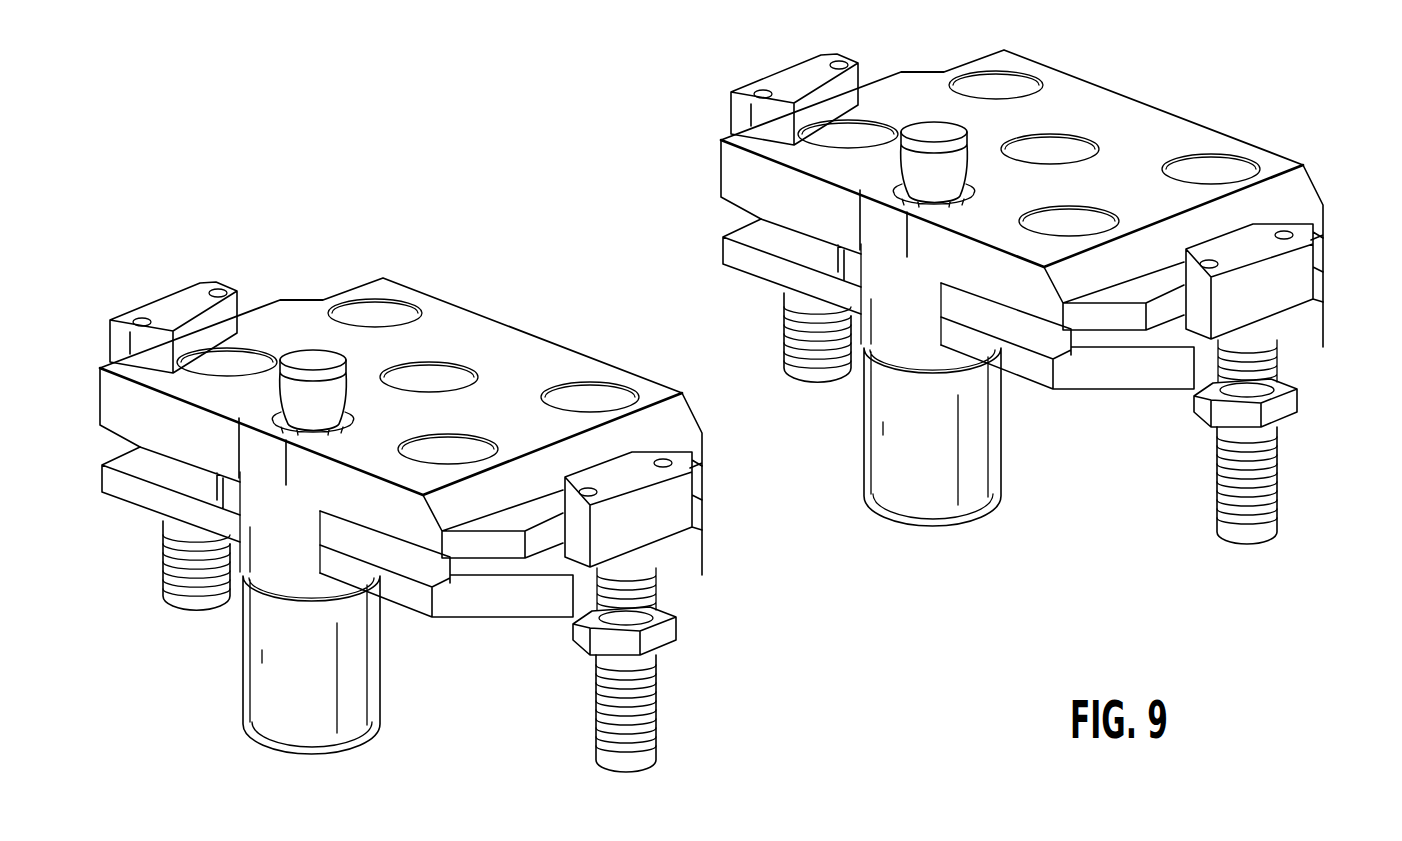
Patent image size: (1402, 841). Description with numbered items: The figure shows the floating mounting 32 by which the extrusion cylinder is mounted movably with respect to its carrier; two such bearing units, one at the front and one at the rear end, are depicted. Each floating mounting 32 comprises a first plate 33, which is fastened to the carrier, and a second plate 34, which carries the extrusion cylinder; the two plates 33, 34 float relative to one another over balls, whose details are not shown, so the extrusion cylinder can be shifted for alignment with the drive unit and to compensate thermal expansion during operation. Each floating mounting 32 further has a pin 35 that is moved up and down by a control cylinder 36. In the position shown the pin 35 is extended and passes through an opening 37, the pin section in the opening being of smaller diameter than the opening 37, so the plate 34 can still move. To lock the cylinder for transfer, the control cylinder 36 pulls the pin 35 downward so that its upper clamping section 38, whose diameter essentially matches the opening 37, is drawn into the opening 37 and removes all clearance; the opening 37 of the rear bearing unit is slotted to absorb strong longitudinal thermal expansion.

The floating mounting 32 is at (742, 390).
The first plate 33 is at (414, 612).
The second plate 34 is at (513, 352).
The pin 35 is at (306, 348).
The control cylinder 36 is at (250, 657).
The opening 37 is at (352, 424).
The clamping section 38 is at (347, 382).